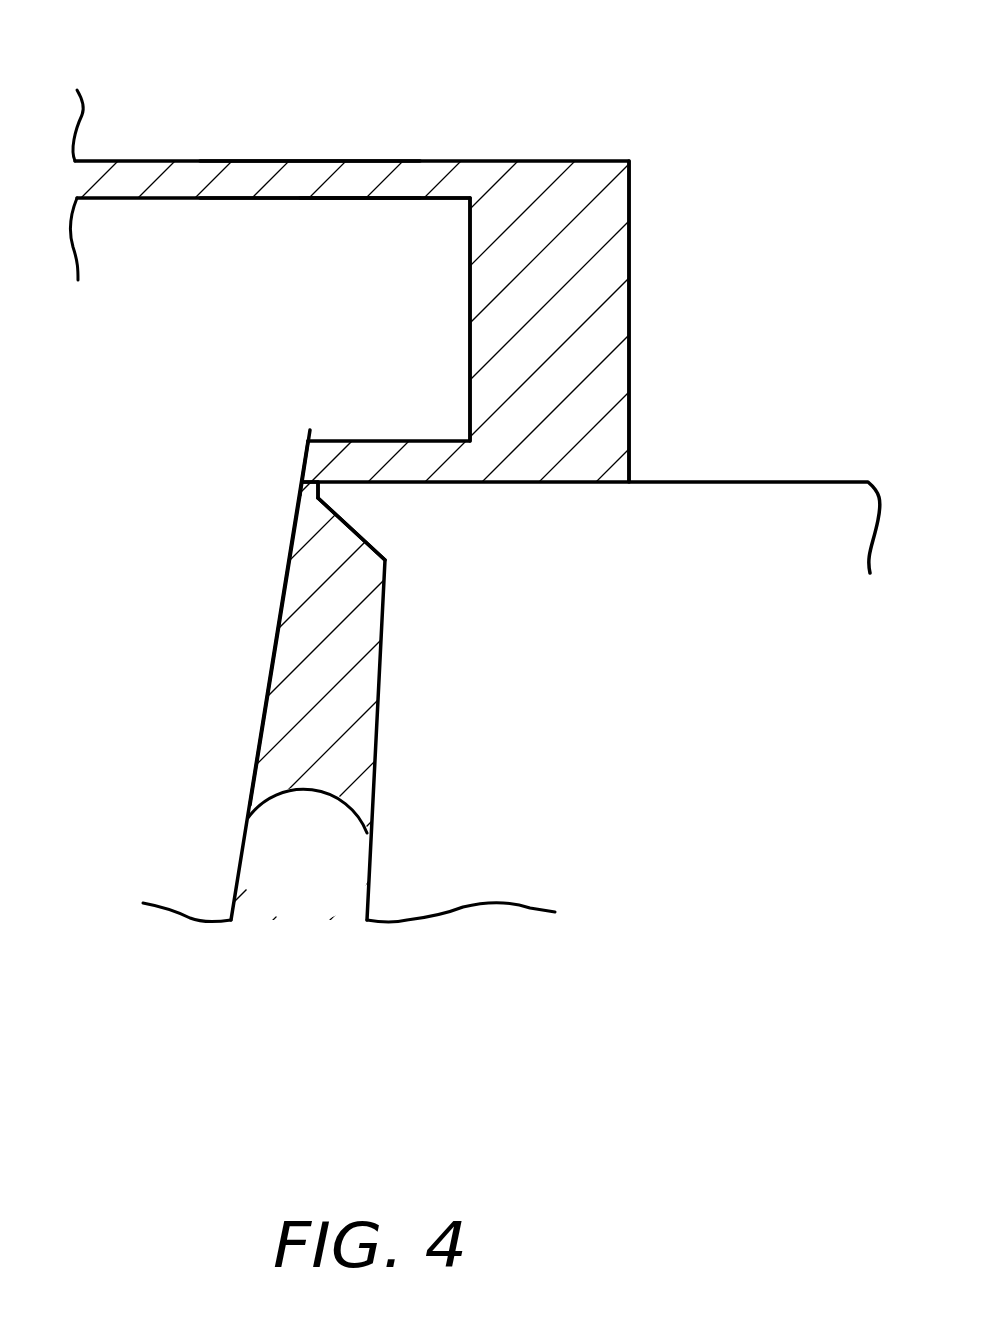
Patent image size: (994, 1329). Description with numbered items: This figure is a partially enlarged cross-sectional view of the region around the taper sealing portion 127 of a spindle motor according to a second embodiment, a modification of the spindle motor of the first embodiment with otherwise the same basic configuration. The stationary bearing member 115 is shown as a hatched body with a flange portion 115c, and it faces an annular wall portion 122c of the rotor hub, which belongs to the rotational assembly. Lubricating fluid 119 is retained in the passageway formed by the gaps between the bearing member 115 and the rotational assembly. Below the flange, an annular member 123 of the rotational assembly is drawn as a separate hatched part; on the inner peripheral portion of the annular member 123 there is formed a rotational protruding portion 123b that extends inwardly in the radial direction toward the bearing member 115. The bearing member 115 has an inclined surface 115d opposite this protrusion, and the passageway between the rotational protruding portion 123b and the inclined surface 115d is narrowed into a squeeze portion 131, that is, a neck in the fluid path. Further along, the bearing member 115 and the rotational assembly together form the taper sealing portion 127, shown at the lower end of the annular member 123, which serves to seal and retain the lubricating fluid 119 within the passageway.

The bearing member 115 is at (220, 340).
The lubricating fluid 119 is at (332, 185).
The flange portion 115c is at (382, 305).
The annular wall portion 122c is at (787, 337).
The squeeze portion 131 is at (303, 486).
The rotational protruding portion 123b is at (340, 497).
The inclined surface 115d is at (280, 620).
The annular member 123 is at (512, 750).
The taper sealing portion 127 is at (312, 812).